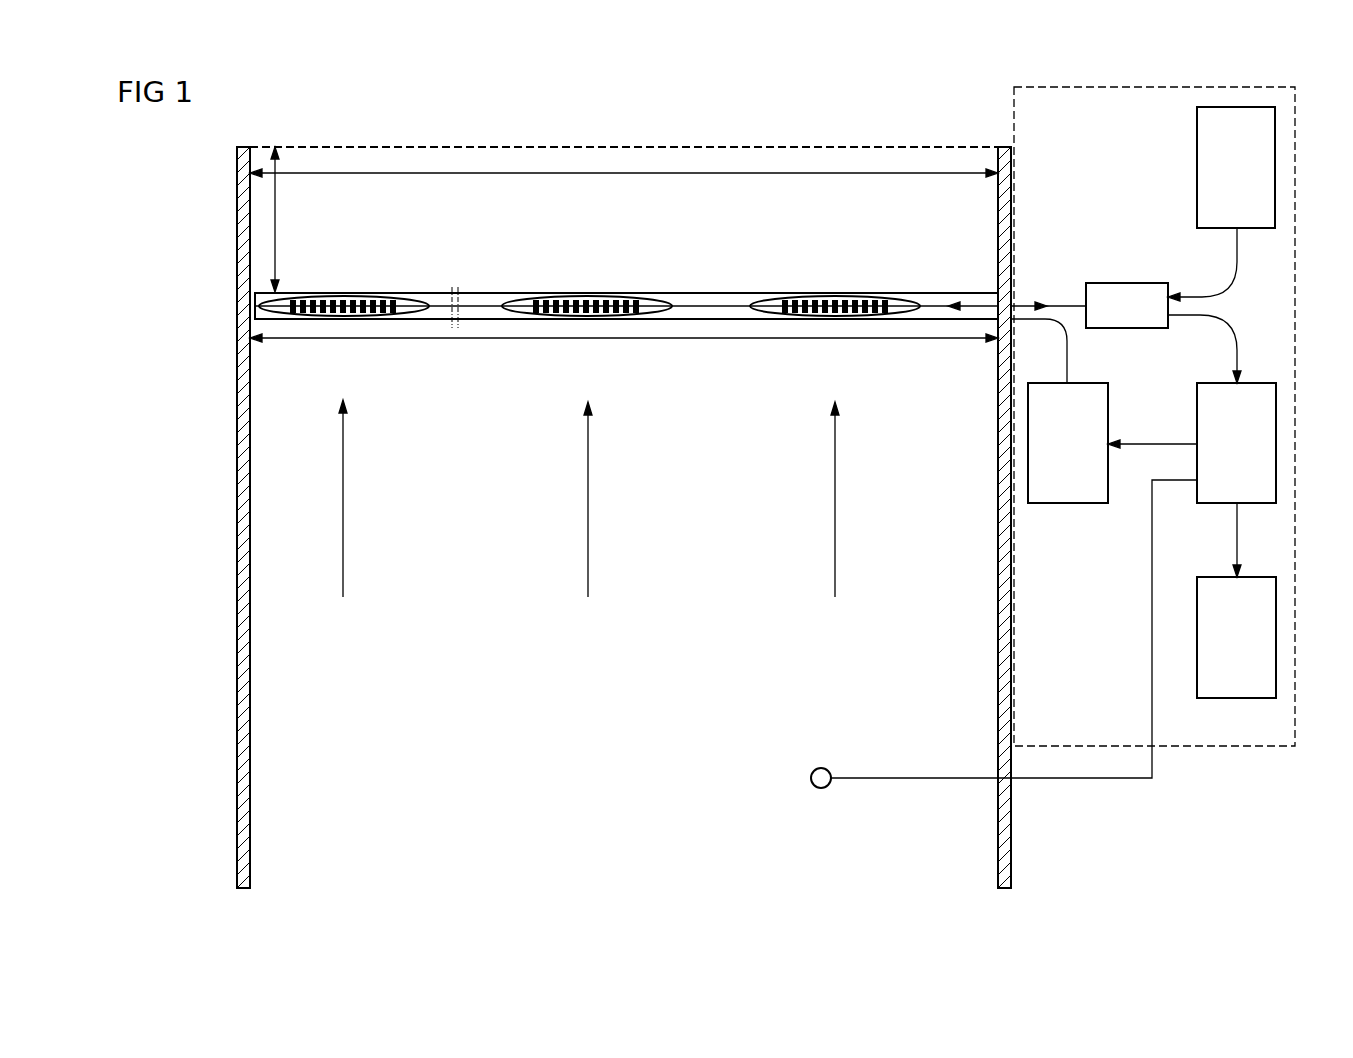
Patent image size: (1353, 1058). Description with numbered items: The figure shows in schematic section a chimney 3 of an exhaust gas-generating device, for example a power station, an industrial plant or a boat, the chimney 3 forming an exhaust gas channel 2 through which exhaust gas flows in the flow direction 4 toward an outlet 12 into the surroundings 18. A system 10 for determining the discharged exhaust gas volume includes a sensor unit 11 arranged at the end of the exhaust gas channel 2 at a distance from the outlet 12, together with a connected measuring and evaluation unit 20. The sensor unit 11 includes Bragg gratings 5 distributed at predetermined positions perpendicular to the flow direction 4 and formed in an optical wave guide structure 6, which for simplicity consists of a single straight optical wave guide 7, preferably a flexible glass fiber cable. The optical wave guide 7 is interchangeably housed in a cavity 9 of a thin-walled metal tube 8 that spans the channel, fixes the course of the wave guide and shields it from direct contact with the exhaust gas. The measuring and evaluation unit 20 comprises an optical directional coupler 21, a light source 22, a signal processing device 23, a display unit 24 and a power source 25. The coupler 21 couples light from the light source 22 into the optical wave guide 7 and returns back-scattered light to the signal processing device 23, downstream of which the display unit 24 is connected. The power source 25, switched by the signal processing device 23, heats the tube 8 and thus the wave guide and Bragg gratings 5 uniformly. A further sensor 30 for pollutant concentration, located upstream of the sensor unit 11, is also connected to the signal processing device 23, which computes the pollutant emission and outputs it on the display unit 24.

The exhaust gas channel 2 is at (596, 695).
The chimney 3 is at (238, 610).
The flow direction 4 is at (343, 508).
The Bragg grating 5 is at (352, 300).
The optical wave guide structure 6 is at (626, 275).
The optical wave guide 7 is at (697, 293).
The tube 8 is at (703, 320).
The cavity 9 is at (743, 300).
The system 10 is at (940, 120).
The sensor unit 11 is at (512, 376).
The outlet 12 is at (478, 146).
The surroundings 18 is at (739, 77).
The measuring and evaluation unit 20 is at (1090, 456).
The optical directional coupler 21 is at (1128, 283).
The light source 22 is at (1197, 132).
The signal processing device 23 is at (1277, 454).
The display unit 24 is at (1277, 636).
The power source 25 is at (1070, 504).
The sensor 30 is at (813, 792).